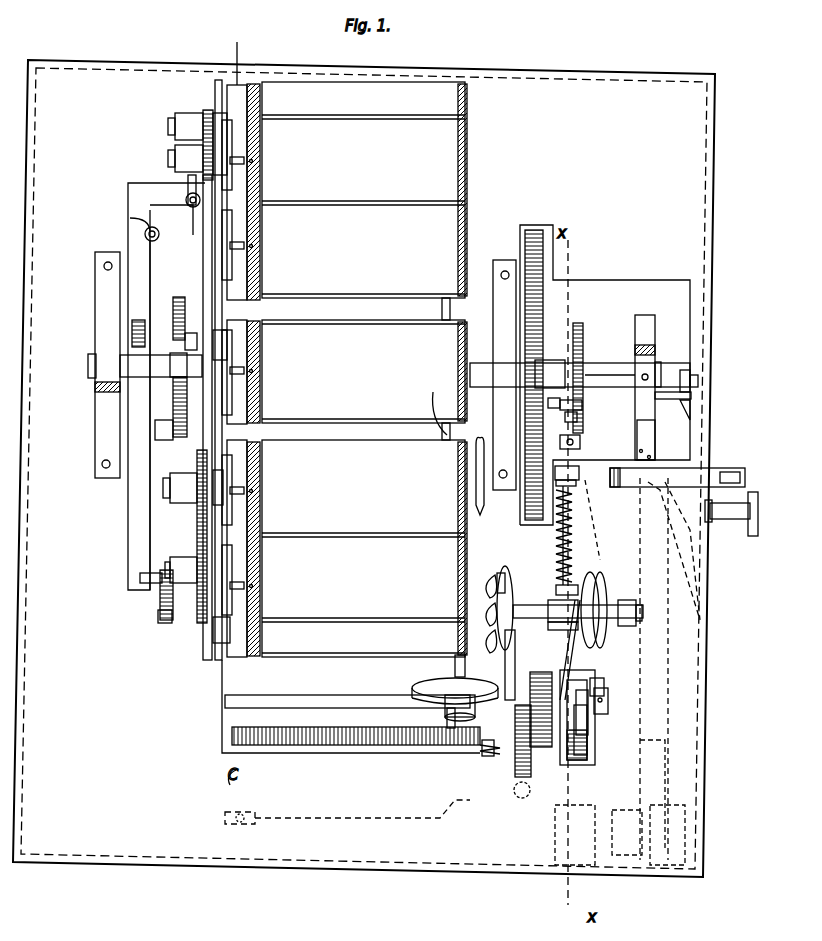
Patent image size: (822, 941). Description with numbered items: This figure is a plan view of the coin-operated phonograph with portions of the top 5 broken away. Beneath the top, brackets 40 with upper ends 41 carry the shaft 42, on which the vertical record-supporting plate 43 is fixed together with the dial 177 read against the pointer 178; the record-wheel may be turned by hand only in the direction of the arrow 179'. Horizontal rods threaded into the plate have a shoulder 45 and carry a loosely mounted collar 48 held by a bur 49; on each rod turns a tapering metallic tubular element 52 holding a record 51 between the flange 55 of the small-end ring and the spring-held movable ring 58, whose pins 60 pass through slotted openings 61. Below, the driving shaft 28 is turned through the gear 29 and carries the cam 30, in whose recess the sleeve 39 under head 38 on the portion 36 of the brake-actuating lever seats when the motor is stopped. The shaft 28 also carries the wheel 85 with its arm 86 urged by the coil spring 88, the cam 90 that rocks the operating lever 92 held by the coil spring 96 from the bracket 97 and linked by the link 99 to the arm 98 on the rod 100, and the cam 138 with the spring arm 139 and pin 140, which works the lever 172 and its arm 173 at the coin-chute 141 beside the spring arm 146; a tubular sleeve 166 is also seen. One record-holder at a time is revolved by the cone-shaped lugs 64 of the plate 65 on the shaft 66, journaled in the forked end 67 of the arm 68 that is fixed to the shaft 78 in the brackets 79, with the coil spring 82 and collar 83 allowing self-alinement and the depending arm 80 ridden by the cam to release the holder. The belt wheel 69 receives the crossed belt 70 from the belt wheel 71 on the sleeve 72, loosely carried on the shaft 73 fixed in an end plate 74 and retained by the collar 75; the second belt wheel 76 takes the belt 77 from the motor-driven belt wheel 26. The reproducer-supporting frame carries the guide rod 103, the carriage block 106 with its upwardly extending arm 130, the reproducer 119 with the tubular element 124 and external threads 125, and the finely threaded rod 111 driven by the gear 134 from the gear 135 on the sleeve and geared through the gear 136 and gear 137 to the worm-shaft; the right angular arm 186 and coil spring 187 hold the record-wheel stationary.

The top 5 is at (364, 468).
The belt wheel 26 is at (590, 755).
The shaft 28 is at (543, 320).
The gear 29 is at (604, 373).
The cam 30 is at (580, 340).
The upwardly and rearwardly extending portion 36 is at (580, 445).
The head 38 is at (582, 405).
The sleeve 39 is at (577, 418).
The supports or brackets 40 is at (95, 408).
The upper ends 41 is at (394, 371).
The shaft 42 is at (88, 365).
The record-supporting plate 43 is at (202, 623).
The shoulder 45 is at (222, 130).
The collar 48 is at (190, 118).
The bur 49 is at (178, 155).
The record 51 is at (363, 369).
The metallic tubular element 52 is at (240, 663).
The flange 55 is at (470, 148).
The movable ring 58 is at (250, 140).
The pins 60 is at (548, 410).
The slotted openings 61 is at (244, 161).
The cone-shaped lug 64 is at (488, 640).
The plate 65 is at (500, 575).
The shaft 66 is at (526, 606).
The forked end 67 is at (552, 600).
The vertically disposed arm 68 is at (637, 612).
The belt wheel 69 is at (603, 607).
The crossed belt 70 is at (565, 670).
The belt wheel 71 is at (570, 680).
The sleeve 72 is at (508, 630).
The shaft 73 is at (608, 700).
The upper end plates 74 is at (205, 718).
The collar 75 is at (602, 686).
The second belt wheel 76 is at (590, 710).
The belt 77 is at (590, 735).
The horizontally disposed shaft 78 is at (575, 530).
The bearings or brackets 79 is at (575, 485).
The depending arm 80 is at (578, 468).
The coil spring 82 is at (578, 548).
The collar 83 is at (572, 505).
The wheel 85 is at (175, 318).
The arm 86 is at (195, 338).
The coil spring 88 is at (168, 408).
The cam 90 is at (132, 333).
The operating lever 92 is at (148, 287).
The coil spring 96 is at (145, 232).
The bracket 97 is at (130, 218).
The arm 98 is at (162, 595).
The link 99 is at (148, 583).
The rod or shaft 100 is at (160, 620).
The supporting guide rod 103 is at (320, 702).
The carriage block 106 is at (188, 183).
The finely threaded rod 111 is at (360, 745).
The reproducer 119 is at (445, 720).
The tubular element 124 is at (458, 680).
The external threads 125 is at (462, 695).
The upwardly extending arm 130 is at (545, 699).
The gear 134 is at (530, 772).
The gear 135 is at (495, 750).
The gear 136 is at (490, 758).
The gear 137 is at (514, 792).
The cam 138 is at (645, 365).
The spring arm 139 is at (645, 330).
The pin 140 is at (669, 405).
The coin-chute 141 is at (690, 478).
The spring arm 146 is at (648, 432).
The tubular sleeve 166 is at (712, 515).
The vertically disposed lever 172 is at (698, 380).
The horizontally disposed arm 173 is at (692, 410).
The dial 177 is at (424, 395).
The pointer 178 is at (480, 500).
The arrow 179' is at (758, 534).
The right angular arm 186 is at (190, 210).
The coil spring 187 is at (186, 200).